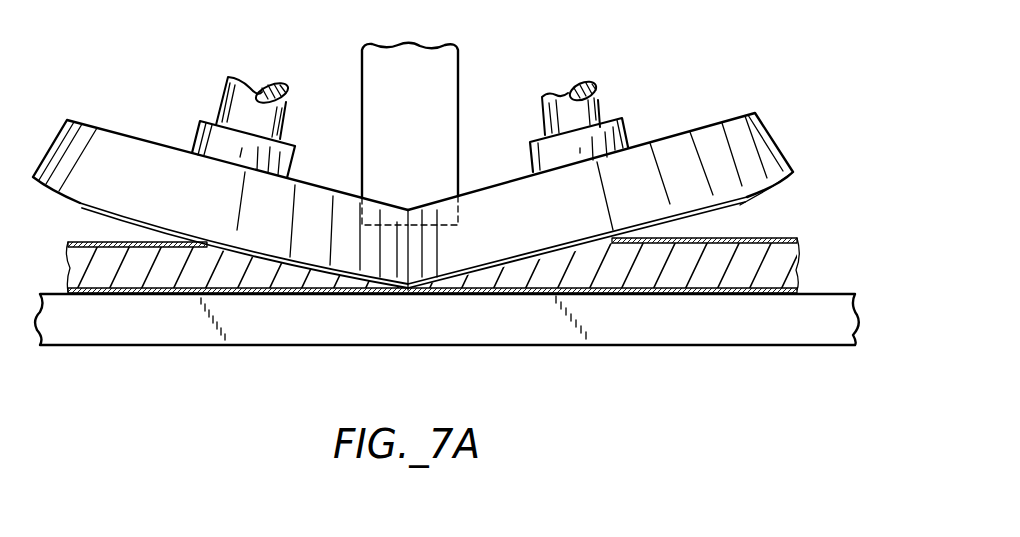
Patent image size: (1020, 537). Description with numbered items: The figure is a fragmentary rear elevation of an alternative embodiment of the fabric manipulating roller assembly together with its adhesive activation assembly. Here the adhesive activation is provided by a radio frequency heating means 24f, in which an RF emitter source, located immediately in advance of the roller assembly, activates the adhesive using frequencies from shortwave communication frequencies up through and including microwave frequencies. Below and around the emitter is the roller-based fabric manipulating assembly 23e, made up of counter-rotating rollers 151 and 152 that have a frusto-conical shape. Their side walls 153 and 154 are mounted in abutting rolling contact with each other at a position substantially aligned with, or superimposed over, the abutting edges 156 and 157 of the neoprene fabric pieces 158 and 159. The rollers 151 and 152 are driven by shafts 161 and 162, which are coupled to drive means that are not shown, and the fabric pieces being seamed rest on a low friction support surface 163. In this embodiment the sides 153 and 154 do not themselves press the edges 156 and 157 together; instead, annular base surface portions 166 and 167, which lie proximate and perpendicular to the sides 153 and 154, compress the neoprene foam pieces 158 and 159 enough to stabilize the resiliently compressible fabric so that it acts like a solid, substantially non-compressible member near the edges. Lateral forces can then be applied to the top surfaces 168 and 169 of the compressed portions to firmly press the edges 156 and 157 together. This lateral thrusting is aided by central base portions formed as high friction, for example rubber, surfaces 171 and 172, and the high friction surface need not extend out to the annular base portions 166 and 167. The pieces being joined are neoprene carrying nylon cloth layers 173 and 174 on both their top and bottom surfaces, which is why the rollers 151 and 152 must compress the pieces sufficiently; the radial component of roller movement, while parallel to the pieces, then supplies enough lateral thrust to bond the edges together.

The roller-based fabric manipulating assembly 23e is at (143, 64).
The radio frequency heating means 24f is at (489, 73).
The counter-rotating roller 151 is at (130, 136).
The counter-rotating roller 152 is at (650, 140).
The side wall 153 is at (55, 137).
The side wall 154 is at (410, 270).
The abutting edge 156 is at (415, 291).
The abutting edge 157 is at (394, 291).
The neoprene fabric piece 158 is at (642, 278).
The neoprene fabric piece 159 is at (160, 283).
The shaft 161 is at (293, 117).
The shaft 162 is at (600, 110).
The low friction support surface 163 is at (813, 293).
The annular base surface portion 166 is at (80, 203).
The annular base surface portion 167 is at (782, 182).
The top surface 168 is at (393, 280).
The top surface 169 is at (448, 240).
The high friction surface 171 is at (68, 243).
The high friction surface 172 is at (708, 216).
The nylon cloth layer 173 is at (112, 253).
The nylon cloth layer 174 is at (797, 238).